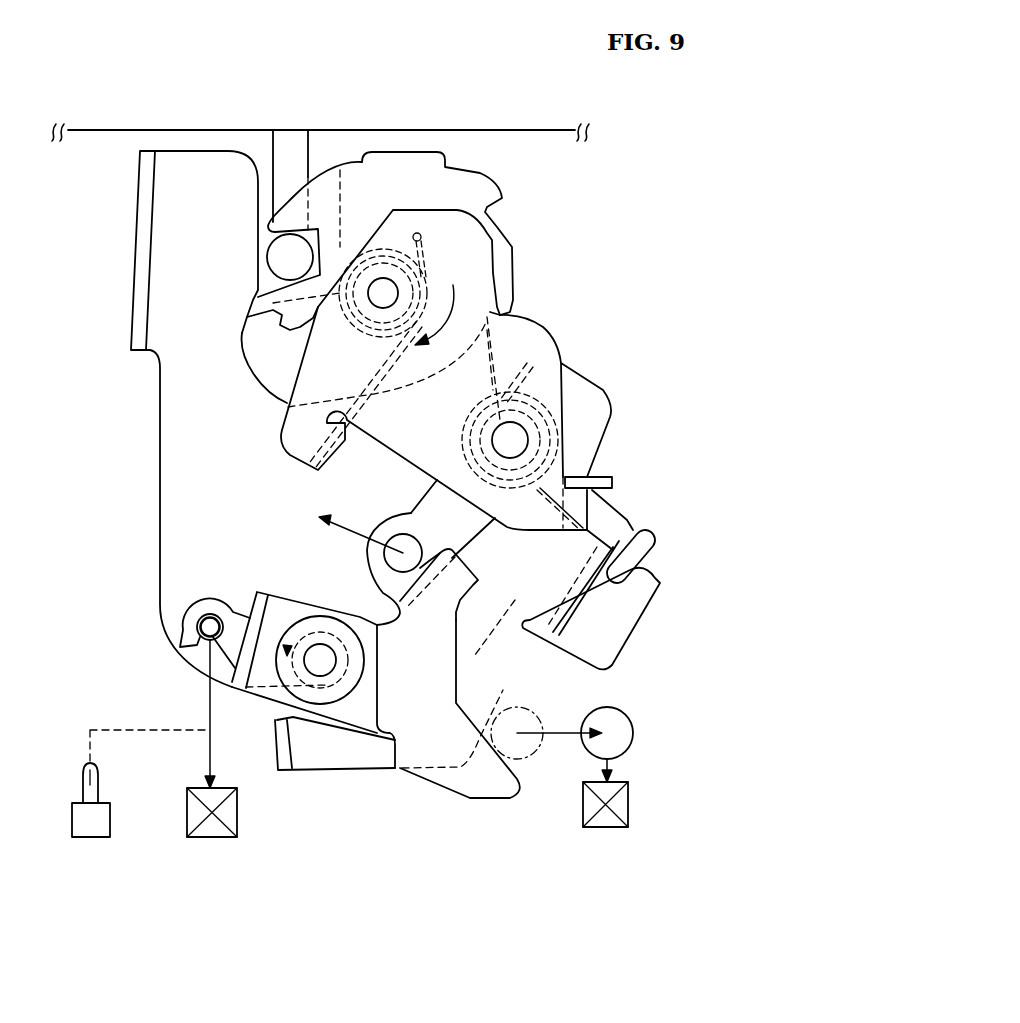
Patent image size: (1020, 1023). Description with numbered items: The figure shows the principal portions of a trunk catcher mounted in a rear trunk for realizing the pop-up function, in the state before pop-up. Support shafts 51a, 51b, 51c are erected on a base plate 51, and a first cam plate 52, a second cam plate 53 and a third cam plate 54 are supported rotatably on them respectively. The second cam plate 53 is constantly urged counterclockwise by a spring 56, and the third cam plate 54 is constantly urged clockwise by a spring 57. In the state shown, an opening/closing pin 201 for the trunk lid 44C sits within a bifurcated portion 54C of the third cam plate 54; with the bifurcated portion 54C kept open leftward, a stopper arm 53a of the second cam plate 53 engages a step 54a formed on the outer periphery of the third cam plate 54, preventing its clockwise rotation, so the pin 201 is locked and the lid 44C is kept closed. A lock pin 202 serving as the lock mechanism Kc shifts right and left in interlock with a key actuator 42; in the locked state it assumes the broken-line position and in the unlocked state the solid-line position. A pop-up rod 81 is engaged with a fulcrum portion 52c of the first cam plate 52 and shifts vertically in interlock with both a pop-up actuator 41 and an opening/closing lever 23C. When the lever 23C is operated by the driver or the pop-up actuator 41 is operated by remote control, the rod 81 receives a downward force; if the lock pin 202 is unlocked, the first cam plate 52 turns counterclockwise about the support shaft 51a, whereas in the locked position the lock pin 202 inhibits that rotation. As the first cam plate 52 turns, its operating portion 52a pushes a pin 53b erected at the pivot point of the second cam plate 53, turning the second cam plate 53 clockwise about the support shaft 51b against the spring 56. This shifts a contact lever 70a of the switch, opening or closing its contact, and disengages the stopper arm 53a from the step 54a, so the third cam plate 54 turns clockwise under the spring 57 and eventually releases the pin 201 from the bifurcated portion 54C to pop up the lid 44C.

The trunk lid 44C is at (205, 107).
The bifurcated portion 54C is at (323, 213).
The third cam plate 54 is at (390, 195).
The opening/closing pin 201 is at (273, 254).
The support shaft 51c is at (385, 292).
The spring 57 is at (378, 367).
The step 54a is at (508, 307).
The stopper arm 53a is at (552, 338).
The base plate 51 is at (222, 475).
The second cam plate 53 is at (458, 530).
The support shaft 51b is at (517, 440).
The spring 56 is at (607, 477).
The pin 53b is at (403, 548).
The contact lever 70a is at (646, 546).
The lock mechanism Kc is at (591, 619).
The operating portion 52a is at (478, 583).
The first cam plate 52 is at (428, 692).
The support shaft 51a is at (322, 655).
The fulcrum portion 52c is at (181, 642).
The pop-up rod 81 is at (200, 627).
The pop-up actuator 41 is at (187, 813).
The opening/closing lever 23C is at (93, 837).
The lock pin 202 is at (543, 713).
The key actuator 42 is at (630, 807).